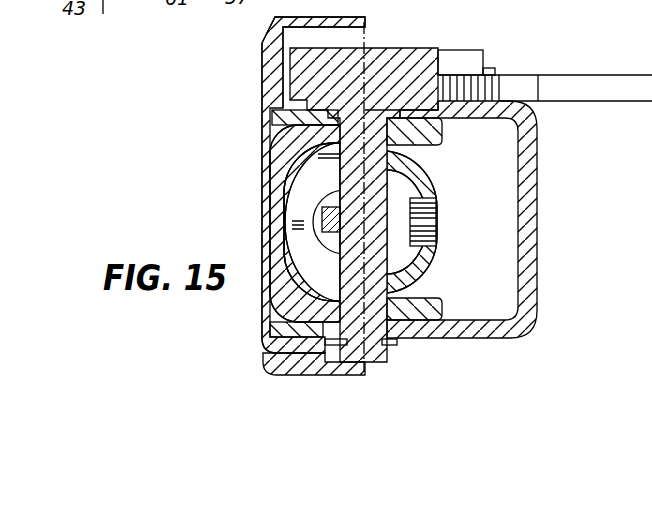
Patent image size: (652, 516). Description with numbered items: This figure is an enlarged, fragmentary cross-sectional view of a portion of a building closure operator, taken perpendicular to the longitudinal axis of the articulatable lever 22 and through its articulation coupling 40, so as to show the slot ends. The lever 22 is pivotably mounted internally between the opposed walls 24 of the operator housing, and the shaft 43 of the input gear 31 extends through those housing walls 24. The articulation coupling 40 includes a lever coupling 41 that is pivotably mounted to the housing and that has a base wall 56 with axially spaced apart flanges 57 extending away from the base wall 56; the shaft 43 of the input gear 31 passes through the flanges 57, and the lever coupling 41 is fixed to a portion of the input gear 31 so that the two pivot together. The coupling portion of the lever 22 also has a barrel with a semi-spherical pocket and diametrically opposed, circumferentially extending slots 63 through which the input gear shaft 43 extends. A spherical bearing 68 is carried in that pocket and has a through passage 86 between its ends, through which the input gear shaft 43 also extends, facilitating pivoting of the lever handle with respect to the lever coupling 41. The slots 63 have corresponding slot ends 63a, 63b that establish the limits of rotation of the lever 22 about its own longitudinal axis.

The articulatable lever 22 is at (262, 246).
The opposed walls 24 is at (512, 112).
The input gear 31 is at (409, 51).
The articulation coupling 40 is at (440, 168).
The lever coupling 41 is at (263, 307).
The input gear shaft 43 is at (378, 318).
The base wall 56 is at (283, 270).
The flanges 57 is at (287, 130).
The slots 63 is at (312, 187).
The slot end 63a is at (290, 164).
The slot end 63b is at (293, 232).
The spherical bearing 68 is at (437, 224).
The through passage 86 is at (325, 207).